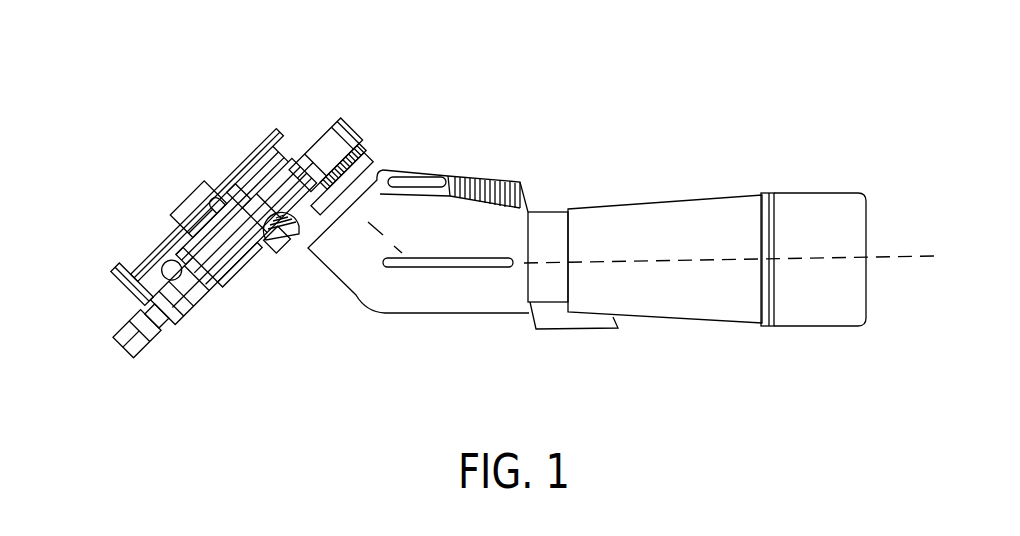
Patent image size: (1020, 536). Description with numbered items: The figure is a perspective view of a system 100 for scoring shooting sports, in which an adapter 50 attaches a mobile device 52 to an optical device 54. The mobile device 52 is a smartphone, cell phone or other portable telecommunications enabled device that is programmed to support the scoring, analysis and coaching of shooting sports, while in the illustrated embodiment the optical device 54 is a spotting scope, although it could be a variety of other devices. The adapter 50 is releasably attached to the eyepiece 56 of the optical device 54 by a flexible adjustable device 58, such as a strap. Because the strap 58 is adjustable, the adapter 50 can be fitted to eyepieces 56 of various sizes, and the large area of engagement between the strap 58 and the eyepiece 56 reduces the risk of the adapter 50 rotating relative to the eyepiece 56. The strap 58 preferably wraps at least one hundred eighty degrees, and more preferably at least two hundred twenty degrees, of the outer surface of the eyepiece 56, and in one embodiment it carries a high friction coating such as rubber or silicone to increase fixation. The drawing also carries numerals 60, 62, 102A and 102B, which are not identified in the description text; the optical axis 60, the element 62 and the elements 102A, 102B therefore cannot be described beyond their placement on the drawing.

The system for scoring shooting sports 100 is at (489, 215).
The adapter 50 is at (282, 252).
The mobile device 52 is at (258, 163).
The optical device 54 is at (582, 208).
The eyepiece 56 is at (370, 158).
The flexible adjustable device 58 is at (348, 138).
The optical axis 60 is at (895, 253).
The battery compartment 62 is at (172, 238).
The control button 102A is at (130, 363).
The control button 102B is at (173, 280).